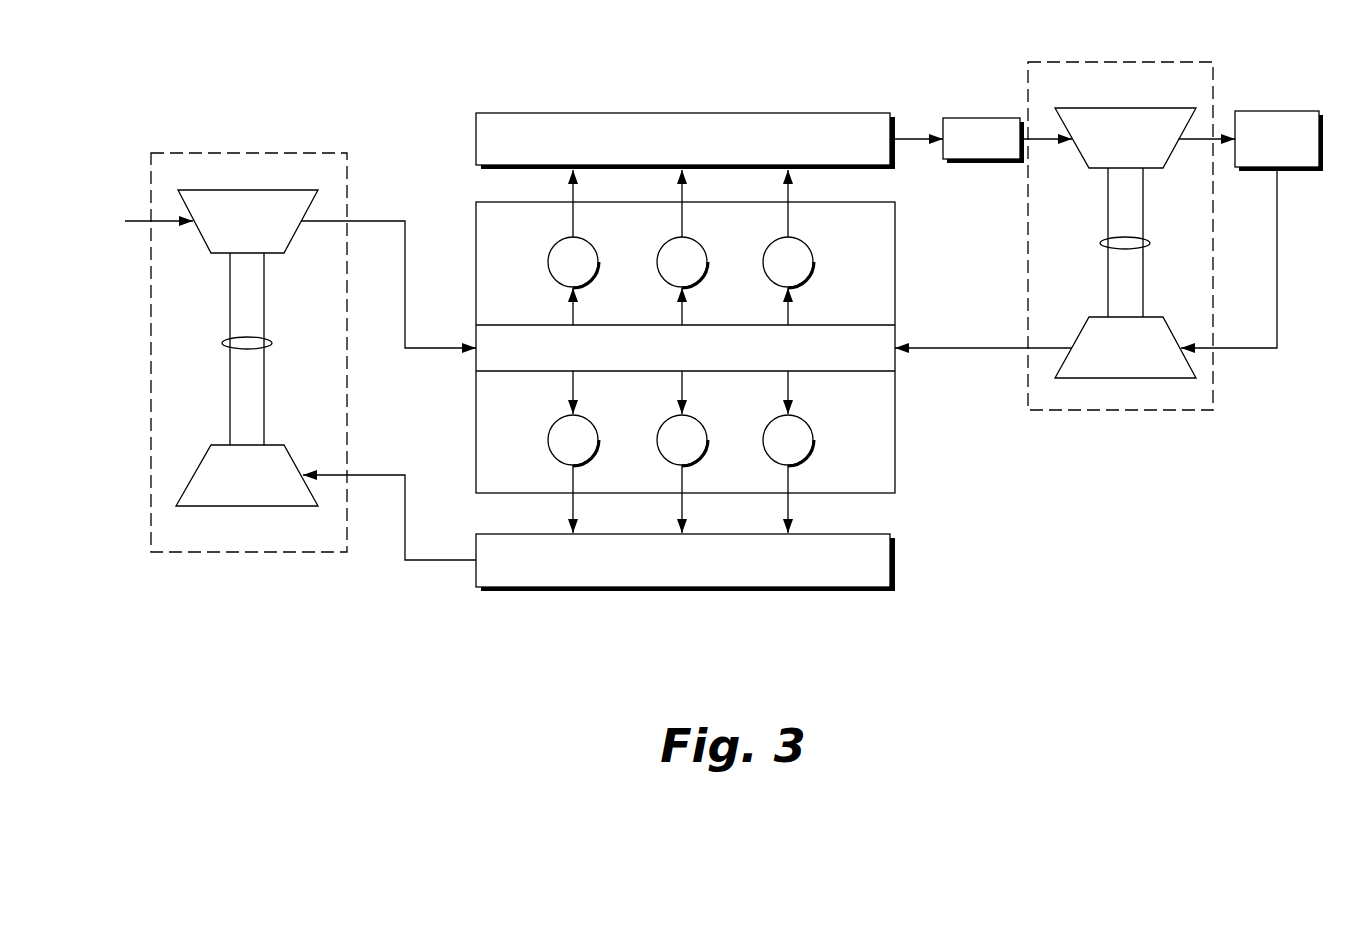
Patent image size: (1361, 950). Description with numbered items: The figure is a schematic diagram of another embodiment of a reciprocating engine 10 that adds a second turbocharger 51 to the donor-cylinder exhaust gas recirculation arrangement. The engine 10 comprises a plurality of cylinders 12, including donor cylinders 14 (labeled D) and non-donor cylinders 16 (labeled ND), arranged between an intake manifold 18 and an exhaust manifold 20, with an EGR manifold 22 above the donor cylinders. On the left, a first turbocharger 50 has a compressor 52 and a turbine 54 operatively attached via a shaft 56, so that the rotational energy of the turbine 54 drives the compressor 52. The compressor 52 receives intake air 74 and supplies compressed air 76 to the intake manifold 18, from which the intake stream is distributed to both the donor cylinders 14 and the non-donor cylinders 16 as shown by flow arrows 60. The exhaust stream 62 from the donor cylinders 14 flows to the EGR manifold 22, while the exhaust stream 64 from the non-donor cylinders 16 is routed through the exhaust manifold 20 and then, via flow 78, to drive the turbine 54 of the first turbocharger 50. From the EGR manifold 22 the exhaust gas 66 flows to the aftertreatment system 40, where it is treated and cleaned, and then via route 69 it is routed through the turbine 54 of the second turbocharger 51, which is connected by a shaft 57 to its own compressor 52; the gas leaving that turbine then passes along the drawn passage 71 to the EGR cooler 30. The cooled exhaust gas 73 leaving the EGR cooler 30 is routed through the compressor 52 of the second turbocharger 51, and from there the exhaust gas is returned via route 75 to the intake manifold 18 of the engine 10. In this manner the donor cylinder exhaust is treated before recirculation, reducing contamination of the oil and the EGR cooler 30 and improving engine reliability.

The engine 10 is at (993, 493).
The cylinders 12 is at (827, 263).
The donor cylinder 14 is at (555, 246).
The non-donor cylinder 16 is at (555, 426).
The intake manifold 18 is at (835, 359).
The exhaust manifold 20 is at (835, 571).
The EGR manifold 22 is at (835, 149).
The EGR cooler 30 is at (1317, 111).
The aftertreatment system 40 is at (943, 118).
The turbocharger 50 is at (151, 153).
The second turbocharger 51 is at (1028, 62).
The compressor 52 is at (280, 190).
The turbine 54 is at (222, 506).
The shaft 56 is at (228, 344).
The shaft 57 is at (1105, 244).
The flow arrow 60 is at (789, 312).
The exhaust stream from donor cylinders 62 is at (789, 197).
The exhaust stream from non-donor cylinders 64 is at (789, 504).
The exhaust stream 66 is at (910, 141).
The route 69 is at (1033, 139).
The passage from turbine to EGR cooler 71 is at (1198, 139).
The cooled exhaust gas 73 is at (1278, 261).
The intake air 74 is at (135, 221).
The route 75 is at (978, 350).
The compressed air 76 is at (430, 350).
The flow 78 is at (465, 562).